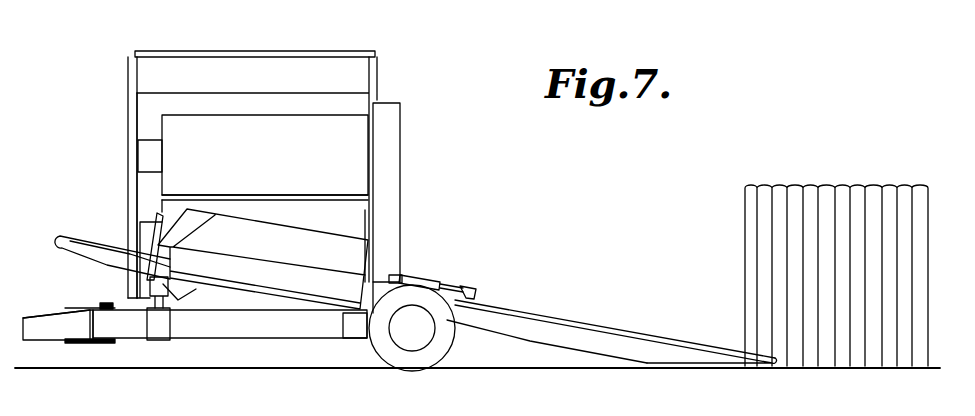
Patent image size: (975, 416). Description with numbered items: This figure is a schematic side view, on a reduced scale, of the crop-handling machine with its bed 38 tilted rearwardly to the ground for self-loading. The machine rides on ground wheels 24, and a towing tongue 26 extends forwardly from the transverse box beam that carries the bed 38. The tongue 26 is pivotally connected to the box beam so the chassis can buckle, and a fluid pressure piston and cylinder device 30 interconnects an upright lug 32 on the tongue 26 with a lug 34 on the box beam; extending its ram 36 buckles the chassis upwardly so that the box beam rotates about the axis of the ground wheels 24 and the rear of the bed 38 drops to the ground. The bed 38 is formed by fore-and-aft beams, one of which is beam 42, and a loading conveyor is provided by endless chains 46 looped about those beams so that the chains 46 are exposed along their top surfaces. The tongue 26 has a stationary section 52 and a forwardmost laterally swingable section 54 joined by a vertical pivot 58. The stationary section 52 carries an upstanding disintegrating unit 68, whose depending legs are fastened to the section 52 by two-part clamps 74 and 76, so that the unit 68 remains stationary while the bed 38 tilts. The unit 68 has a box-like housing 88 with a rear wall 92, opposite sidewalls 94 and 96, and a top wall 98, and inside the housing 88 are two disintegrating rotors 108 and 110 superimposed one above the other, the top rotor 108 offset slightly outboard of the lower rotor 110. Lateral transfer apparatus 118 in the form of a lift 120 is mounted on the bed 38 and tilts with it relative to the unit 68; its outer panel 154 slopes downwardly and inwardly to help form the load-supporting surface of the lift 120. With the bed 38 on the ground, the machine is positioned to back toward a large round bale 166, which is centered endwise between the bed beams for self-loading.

The ground wheels 24 is at (435, 355).
The towing tongue 26 is at (40, 308).
The fluid pressure piston and cylinder device 30 is at (431, 273).
The lug 32 is at (391, 276).
The lug 34 is at (478, 298).
The ram 36 is at (451, 280).
The bed 38 is at (611, 346).
The beam 42 is at (603, 345).
The endless chains 46 is at (580, 323).
The stationary section 52 is at (243, 330).
The forwardmost laterally swingable section 54 is at (48, 332).
The vertical pivot 58 is at (105, 303).
The disintegrating unit 68 is at (387, 41).
The two-part clamp 74 is at (358, 333).
The two-part clamp 76 is at (162, 338).
The box-like housing 88 is at (128, 74).
The rear wall 92 is at (149, 113).
The sidewall 94 is at (369, 95).
The sidewall 96 is at (136, 158).
The top wall 98 is at (267, 51).
The disintegrating rotor 108 is at (200, 115).
The disintegrating rotor 110 is at (315, 197).
The lateral transfer apparatus 118 is at (350, 223).
The lift 120 is at (156, 214).
The panel 154 is at (253, 272).
The bale 166 is at (812, 188).